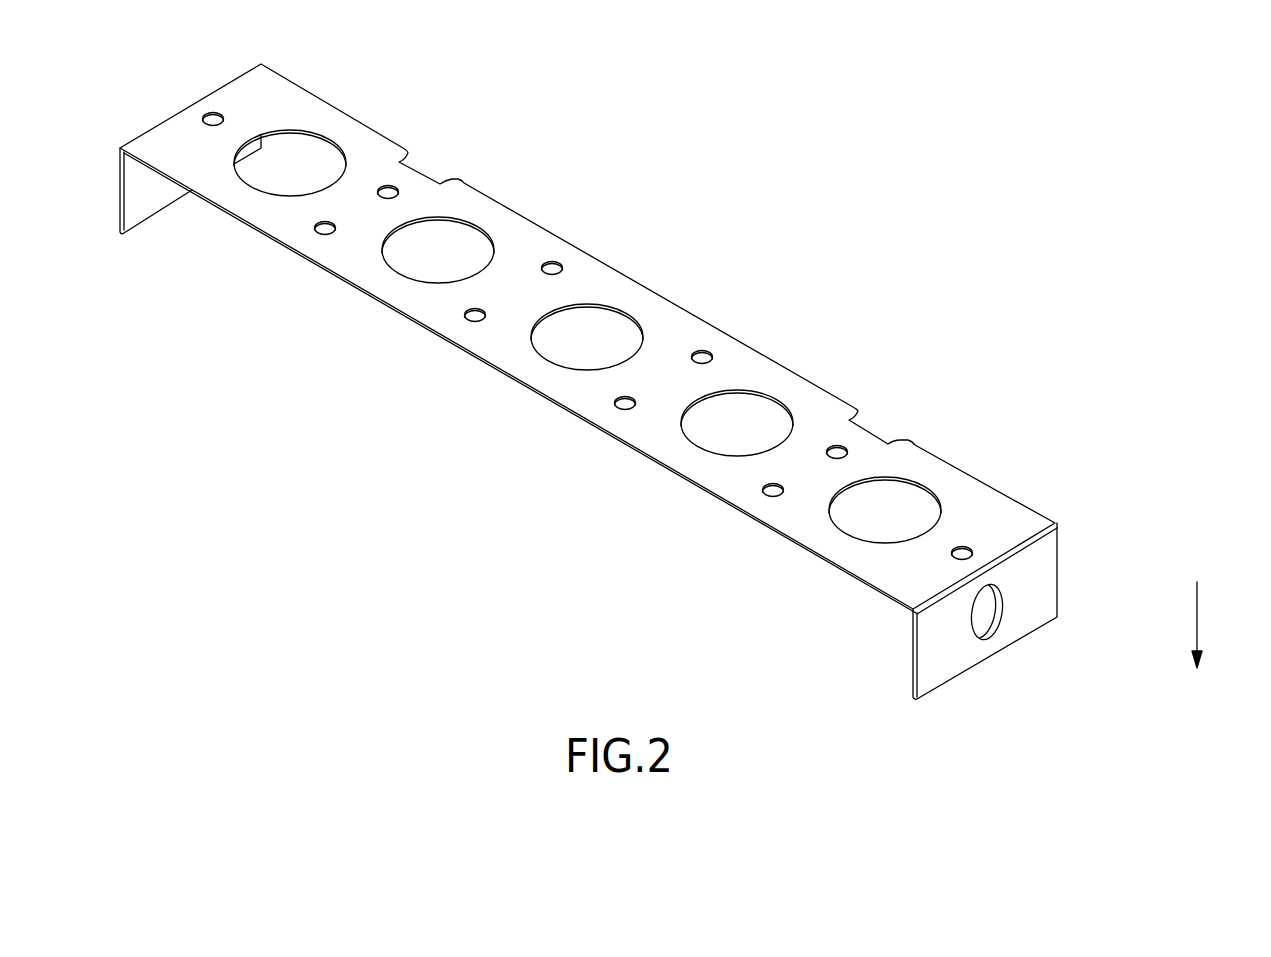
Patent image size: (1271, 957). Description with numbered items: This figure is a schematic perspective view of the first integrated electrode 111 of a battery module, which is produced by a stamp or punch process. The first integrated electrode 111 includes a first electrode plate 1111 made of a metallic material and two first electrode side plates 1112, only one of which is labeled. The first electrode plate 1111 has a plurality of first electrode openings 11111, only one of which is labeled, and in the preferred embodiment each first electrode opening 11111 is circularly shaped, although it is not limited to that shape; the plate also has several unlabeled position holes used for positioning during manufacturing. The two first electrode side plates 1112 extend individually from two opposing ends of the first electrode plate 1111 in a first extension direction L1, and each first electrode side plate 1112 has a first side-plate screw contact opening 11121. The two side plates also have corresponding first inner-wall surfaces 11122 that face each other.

The first integrated electrode 111 is at (642, 381).
The first electrode plate 1111 is at (587, 338).
The first electrode opening 11111 is at (593, 317).
The first electrode side plate 1112 is at (1039, 611).
The first side-plate screw contact opening 11121 is at (987, 612).
The first inner-wall surface 11122 is at (150, 210).
The first extension direction L1 is at (1220, 625).